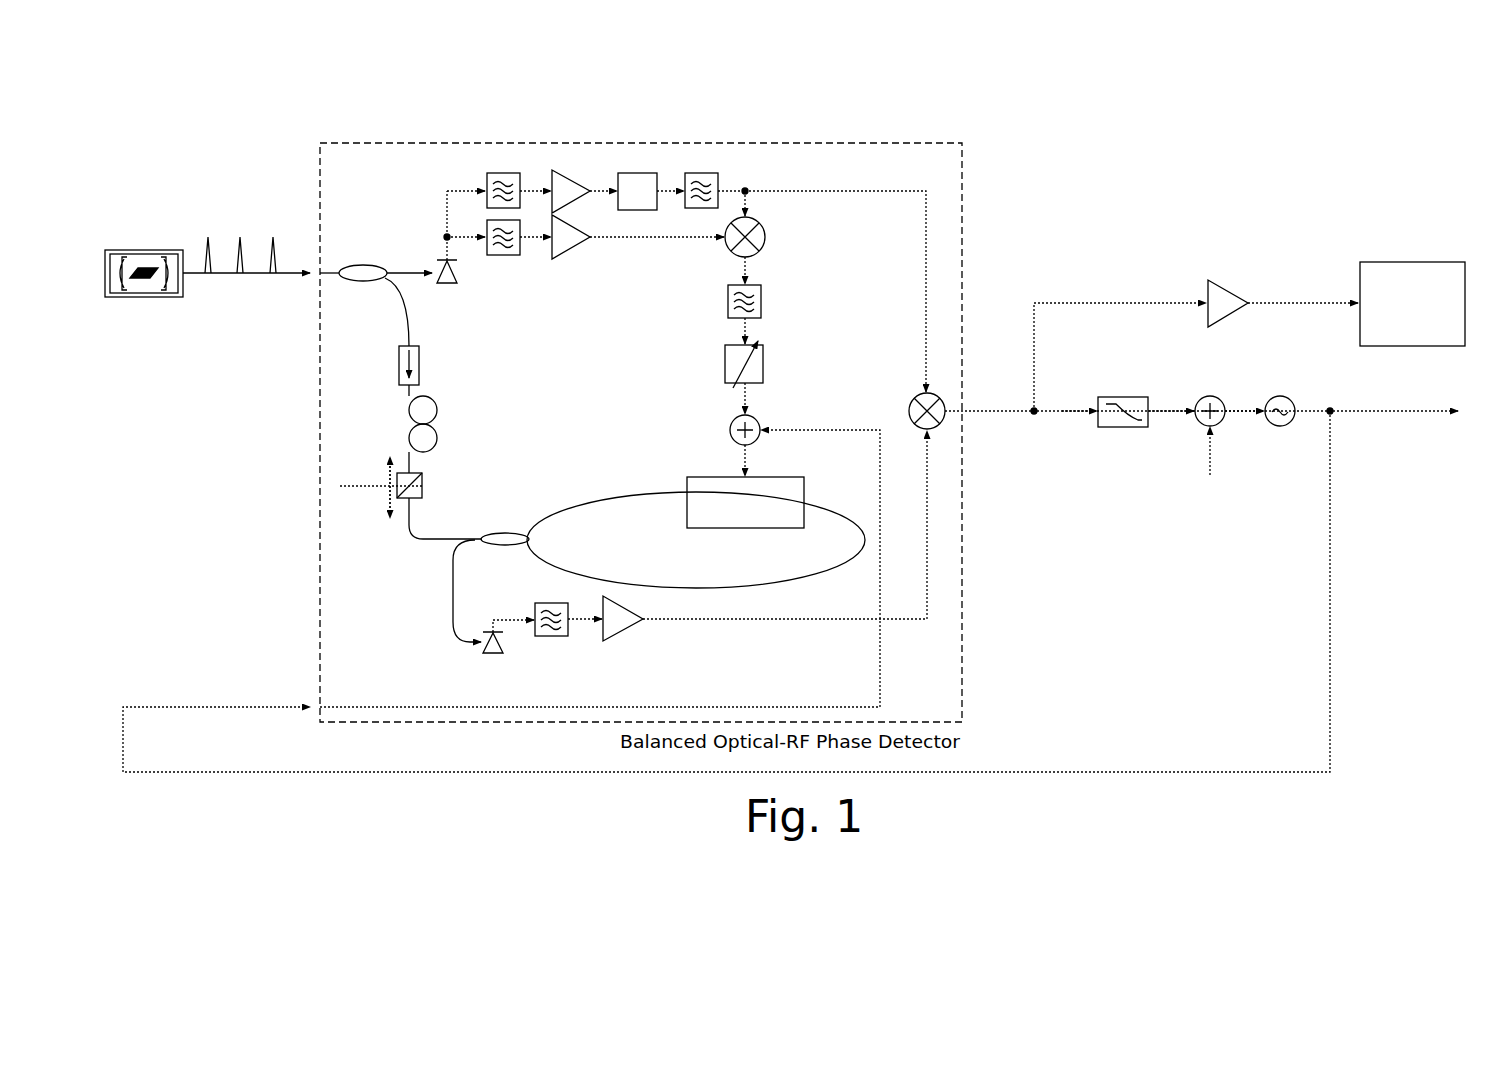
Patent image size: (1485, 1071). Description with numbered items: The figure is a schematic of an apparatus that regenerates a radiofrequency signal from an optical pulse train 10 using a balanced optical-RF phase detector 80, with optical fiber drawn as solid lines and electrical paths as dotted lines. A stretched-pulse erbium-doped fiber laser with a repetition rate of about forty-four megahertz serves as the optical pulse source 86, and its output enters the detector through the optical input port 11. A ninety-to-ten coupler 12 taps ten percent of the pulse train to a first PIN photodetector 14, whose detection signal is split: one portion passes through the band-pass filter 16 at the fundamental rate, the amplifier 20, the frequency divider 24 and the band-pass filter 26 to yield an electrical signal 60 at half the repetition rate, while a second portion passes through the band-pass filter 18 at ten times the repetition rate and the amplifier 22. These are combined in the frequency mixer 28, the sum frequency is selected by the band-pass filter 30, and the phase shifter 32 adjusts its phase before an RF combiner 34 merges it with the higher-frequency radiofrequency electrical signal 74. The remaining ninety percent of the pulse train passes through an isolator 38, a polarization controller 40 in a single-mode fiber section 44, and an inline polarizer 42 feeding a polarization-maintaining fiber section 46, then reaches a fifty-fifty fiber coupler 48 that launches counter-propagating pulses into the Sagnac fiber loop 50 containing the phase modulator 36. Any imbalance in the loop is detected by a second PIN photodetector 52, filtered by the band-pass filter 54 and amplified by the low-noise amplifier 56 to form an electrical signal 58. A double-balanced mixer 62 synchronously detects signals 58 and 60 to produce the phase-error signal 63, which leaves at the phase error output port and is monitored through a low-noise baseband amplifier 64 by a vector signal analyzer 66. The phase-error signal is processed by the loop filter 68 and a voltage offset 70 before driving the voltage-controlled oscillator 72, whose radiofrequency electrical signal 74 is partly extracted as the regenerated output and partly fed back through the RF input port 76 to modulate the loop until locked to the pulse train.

The optical pulse train 10 is at (197, 270).
The optical input fiber 11 is at (312, 268).
The 90/10 coupler 12 is at (362, 281).
The first PIN photodetector 14 is at (460, 275).
The band-pass filter 16 is at (487, 180).
The band-pass filter 18 is at (519, 250).
The amplifier 20 is at (568, 178).
The amplifier 22 is at (578, 246).
The frequency divider 24 is at (634, 210).
The band-pass filter 26 is at (718, 180).
The frequency mixer 28 is at (727, 241).
The band-pass filter 30 is at (761, 300).
The phase shifter 32 is at (763, 362).
The RF combiner 34 is at (758, 440).
The phase modulator 36 is at (804, 489).
The isolator 38 is at (399, 370).
The polarization controller 40 is at (437, 410).
The inline polarizer 42 is at (412, 498).
The single-mode fiber section 44 is at (413, 463).
The polarization-maintaining fiber section 46 is at (413, 545).
The 50/50 fiber coupler 48 is at (515, 533).
The fiber loop 50 is at (598, 500).
The second PIN photodetector 52 is at (478, 648).
The band-pass filter 54 is at (568, 627).
The low-noise amplifier 56 is at (636, 626).
The electrical signal 58 is at (741, 620).
The electrical signal 60 is at (926, 266).
The double-balanced mixer 62 is at (945, 402).
The phase-error signal 63 is at (1062, 408).
The low-noise baseband amplifier 64 is at (1210, 312).
The vector signal analyzer 66 is at (1413, 262).
The loop filter 68 is at (1128, 427).
The voltage offset 70 is at (1210, 395).
The voltage-controlled oscillator 72 is at (1295, 402).
The radiofrequency electrical signal 74 is at (826, 428).
The RF input port 76 is at (310, 705).
The balanced optical-RF phase detector 80 is at (962, 620).
The optical pulse source 86 is at (135, 297).